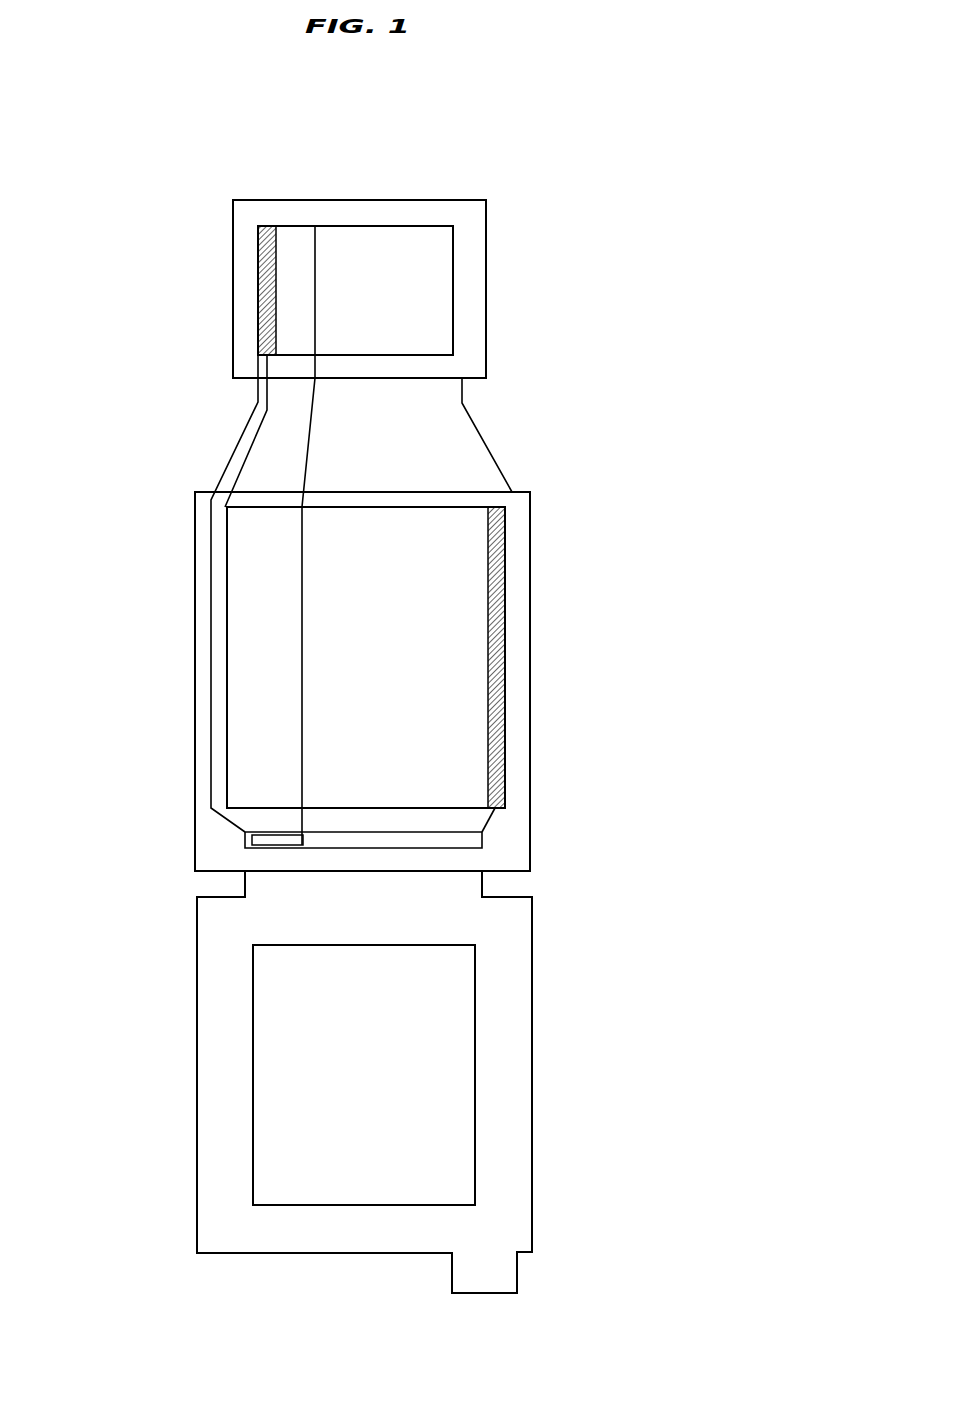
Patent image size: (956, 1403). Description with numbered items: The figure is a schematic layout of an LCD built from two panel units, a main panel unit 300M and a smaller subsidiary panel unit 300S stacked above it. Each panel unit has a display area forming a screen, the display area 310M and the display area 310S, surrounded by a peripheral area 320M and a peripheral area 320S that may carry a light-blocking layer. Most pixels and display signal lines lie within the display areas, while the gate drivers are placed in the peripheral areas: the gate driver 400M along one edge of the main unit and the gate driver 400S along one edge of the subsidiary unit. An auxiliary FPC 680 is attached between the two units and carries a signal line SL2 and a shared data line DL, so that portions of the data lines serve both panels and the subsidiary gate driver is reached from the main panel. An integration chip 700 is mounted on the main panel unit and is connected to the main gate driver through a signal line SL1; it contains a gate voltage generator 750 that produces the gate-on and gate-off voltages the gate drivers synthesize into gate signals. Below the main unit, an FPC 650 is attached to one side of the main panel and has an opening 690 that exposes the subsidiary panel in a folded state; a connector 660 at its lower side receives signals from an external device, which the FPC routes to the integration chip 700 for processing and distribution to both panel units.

The subsidiary panel unit 300S is at (508, 170).
The display area of the subsidiary panel unit 310S is at (443, 258).
The peripheral area of the subsidiary panel unit 320S is at (468, 287).
The gate driver of the subsidiary panel unit 400S is at (258, 252).
The main panel unit 300M is at (568, 507).
The display area of the main panel unit 310M is at (255, 605).
The peripheral area of the main panel unit 320M is at (207, 673).
The gate driver of the main panel unit 400M is at (505, 613).
The data line DL is at (300, 548).
The signal line SL1 is at (495, 822).
The signal line SL2 is at (256, 410).
The auxiliary FPC 680 is at (486, 440).
The integration chip 700 is at (482, 838).
The gate voltage generator 750 is at (245, 837).
The FPC 650 is at (532, 975).
The opening 690 is at (475, 1047).
The connector 660 is at (507, 1268).